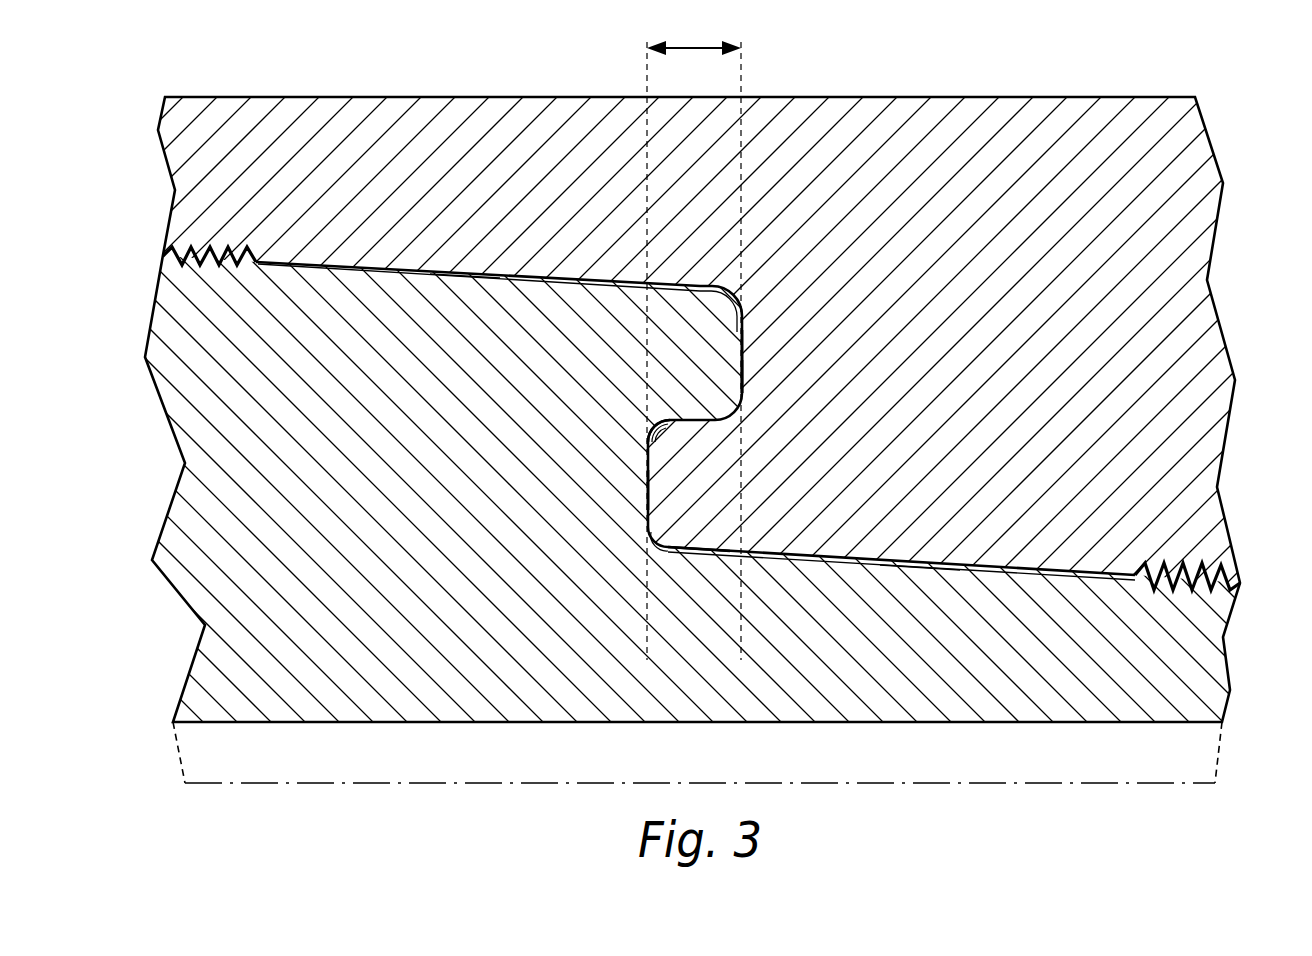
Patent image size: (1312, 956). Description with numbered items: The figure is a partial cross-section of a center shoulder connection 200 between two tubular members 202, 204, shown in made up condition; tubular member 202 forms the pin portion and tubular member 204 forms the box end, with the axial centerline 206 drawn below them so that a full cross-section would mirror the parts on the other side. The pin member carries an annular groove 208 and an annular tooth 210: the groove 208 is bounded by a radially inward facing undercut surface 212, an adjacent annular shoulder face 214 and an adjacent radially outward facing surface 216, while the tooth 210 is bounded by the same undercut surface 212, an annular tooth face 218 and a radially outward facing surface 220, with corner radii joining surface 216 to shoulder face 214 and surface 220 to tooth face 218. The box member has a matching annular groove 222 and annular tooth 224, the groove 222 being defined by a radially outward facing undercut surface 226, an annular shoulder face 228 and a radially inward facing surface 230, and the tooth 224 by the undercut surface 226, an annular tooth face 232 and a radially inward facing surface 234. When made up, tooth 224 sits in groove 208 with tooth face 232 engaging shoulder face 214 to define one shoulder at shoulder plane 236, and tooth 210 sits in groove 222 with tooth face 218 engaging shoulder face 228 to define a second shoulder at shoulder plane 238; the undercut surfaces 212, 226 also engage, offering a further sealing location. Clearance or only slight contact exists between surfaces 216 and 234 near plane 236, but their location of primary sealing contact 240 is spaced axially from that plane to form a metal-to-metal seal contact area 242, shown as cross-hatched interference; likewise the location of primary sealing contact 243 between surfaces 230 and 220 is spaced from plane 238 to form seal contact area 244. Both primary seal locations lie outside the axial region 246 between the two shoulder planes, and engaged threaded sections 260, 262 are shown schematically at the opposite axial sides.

The center shoulder connection 200 is at (197, 82).
The tubular member 202 is at (275, 575).
The tubular member 204 is at (1045, 125).
The axial centerline 206 is at (430, 783).
The annular groove 208 is at (645, 483).
The annular tooth 210 is at (718, 333).
The radially inward facing undercut surface 212 is at (707, 422).
The annular shoulder face 214 is at (645, 460).
The radially outward facing surface 216 is at (688, 553).
The annular tooth face 218 is at (740, 348).
The radially outward facing surface 220 is at (683, 286).
The annular groove 222 is at (745, 383).
The annular tooth 224 is at (678, 503).
The radially outward facing undercut surface 226 is at (697, 445).
The annular shoulder face 228 is at (745, 363).
The radially inward facing surface 230 is at (703, 282).
The annular tooth face 232 is at (648, 490).
The radially inward facing surface 234 is at (707, 550).
The shoulder plane 236 is at (647, 70).
The shoulder plane 238 is at (741, 72).
The location of primary sealing contact 240 is at (905, 548).
The metal-to-metal seal contact area 242 is at (910, 568).
The location of primary sealing contact 243 is at (480, 258).
The metal-to-metal seal contact area 244 is at (467, 277).
The axial region 246 is at (693, 45).
The engaged threaded section 260 is at (1182, 583).
The engaged threaded section 262 is at (213, 267).